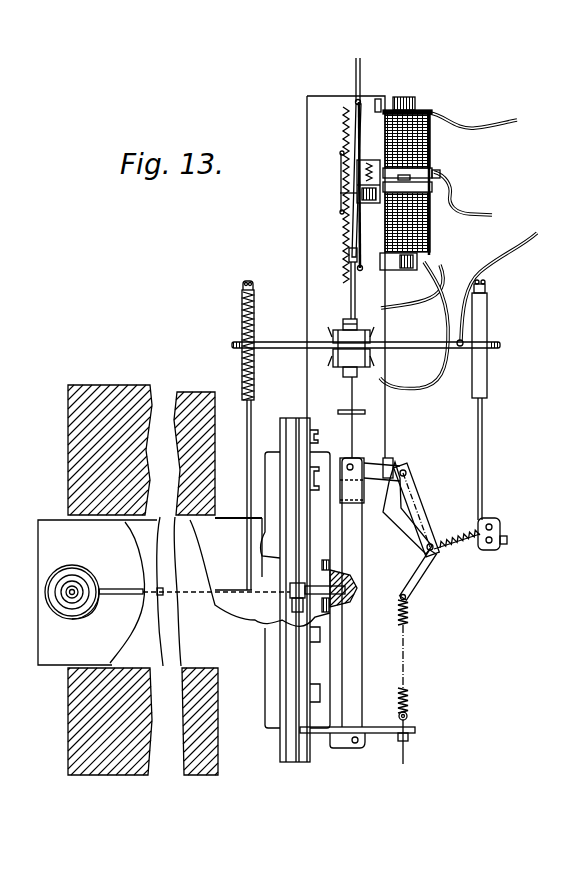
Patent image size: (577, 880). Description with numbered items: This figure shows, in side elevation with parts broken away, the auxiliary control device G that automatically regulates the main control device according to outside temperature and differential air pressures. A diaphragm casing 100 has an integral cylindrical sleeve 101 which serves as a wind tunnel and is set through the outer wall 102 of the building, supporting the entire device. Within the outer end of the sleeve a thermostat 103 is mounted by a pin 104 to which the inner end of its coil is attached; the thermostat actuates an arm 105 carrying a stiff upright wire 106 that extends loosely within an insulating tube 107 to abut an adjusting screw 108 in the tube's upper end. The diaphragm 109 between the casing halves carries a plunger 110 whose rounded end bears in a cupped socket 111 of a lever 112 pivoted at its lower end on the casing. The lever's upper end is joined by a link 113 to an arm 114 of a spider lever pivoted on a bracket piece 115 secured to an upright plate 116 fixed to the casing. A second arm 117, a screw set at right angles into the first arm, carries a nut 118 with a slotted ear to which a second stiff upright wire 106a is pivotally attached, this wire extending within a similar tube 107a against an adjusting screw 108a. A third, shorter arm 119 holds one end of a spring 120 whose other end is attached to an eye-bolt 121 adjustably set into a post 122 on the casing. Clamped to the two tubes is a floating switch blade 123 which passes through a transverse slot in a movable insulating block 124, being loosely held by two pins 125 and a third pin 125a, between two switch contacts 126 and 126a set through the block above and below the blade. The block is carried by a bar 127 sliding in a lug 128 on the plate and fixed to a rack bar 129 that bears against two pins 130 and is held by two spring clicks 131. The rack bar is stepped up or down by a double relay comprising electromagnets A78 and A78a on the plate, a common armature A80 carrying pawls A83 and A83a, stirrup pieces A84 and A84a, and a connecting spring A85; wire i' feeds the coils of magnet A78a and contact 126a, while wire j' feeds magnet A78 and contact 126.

The diaphragm casing 100 is at (294, 695).
The cylindrical sleeve 101 is at (63, 538).
The outer wall 102 is at (131, 388).
The thermostat 103 is at (60, 612).
The pin 104 is at (80, 583).
The arm 105 is at (222, 588).
The stiff upright wire 106 is at (247, 472).
The tube 107 is at (241, 361).
The adjusting screw 108 is at (243, 286).
The diaphragm 109 is at (296, 613).
The plunger 110 is at (308, 585).
The socket 111 is at (352, 578).
The lever 112 is at (352, 665).
The link 113 is at (370, 470).
The arm 114 is at (418, 503).
The bracket piece 115 is at (410, 519).
The upright plate 116 is at (323, 417).
The second arm 117 is at (460, 549).
The nut 118 is at (489, 543).
The third arm 119 is at (418, 584).
The spring 120 is at (407, 666).
The eye-bolt 121 is at (409, 716).
The post 122 is at (378, 747).
The floating switch blade 123 is at (300, 350).
The block 124 is at (342, 324).
The pins 125 is at (333, 360).
The third pin 125a is at (342, 369).
The switch contact 126 is at (381, 338).
The switch contact 126a is at (333, 343).
The bar 127 is at (350, 288).
The lug 128 is at (353, 427).
The rack bar 129 is at (343, 108).
The pins 130 is at (343, 153).
The spring clicks 131 is at (347, 110).
The electromagnet A78 is at (428, 148).
The electromagnet A78a is at (433, 222).
The common armature A80 is at (440, 175).
The pawl A83 is at (356, 177).
The pawl A83a is at (350, 193).
The stirrup piece A84 is at (364, 152).
The stirrup piece A84a is at (349, 255).
The connecting spring A85 is at (418, 111).
The auxiliary control device G is at (298, 287).
The wire i' is at (449, 203).
The wire j' is at (436, 289).
The stiff upright wire 106a is at (484, 446).
The tube 107a is at (484, 377).
The adjusting screw 108a is at (488, 283).